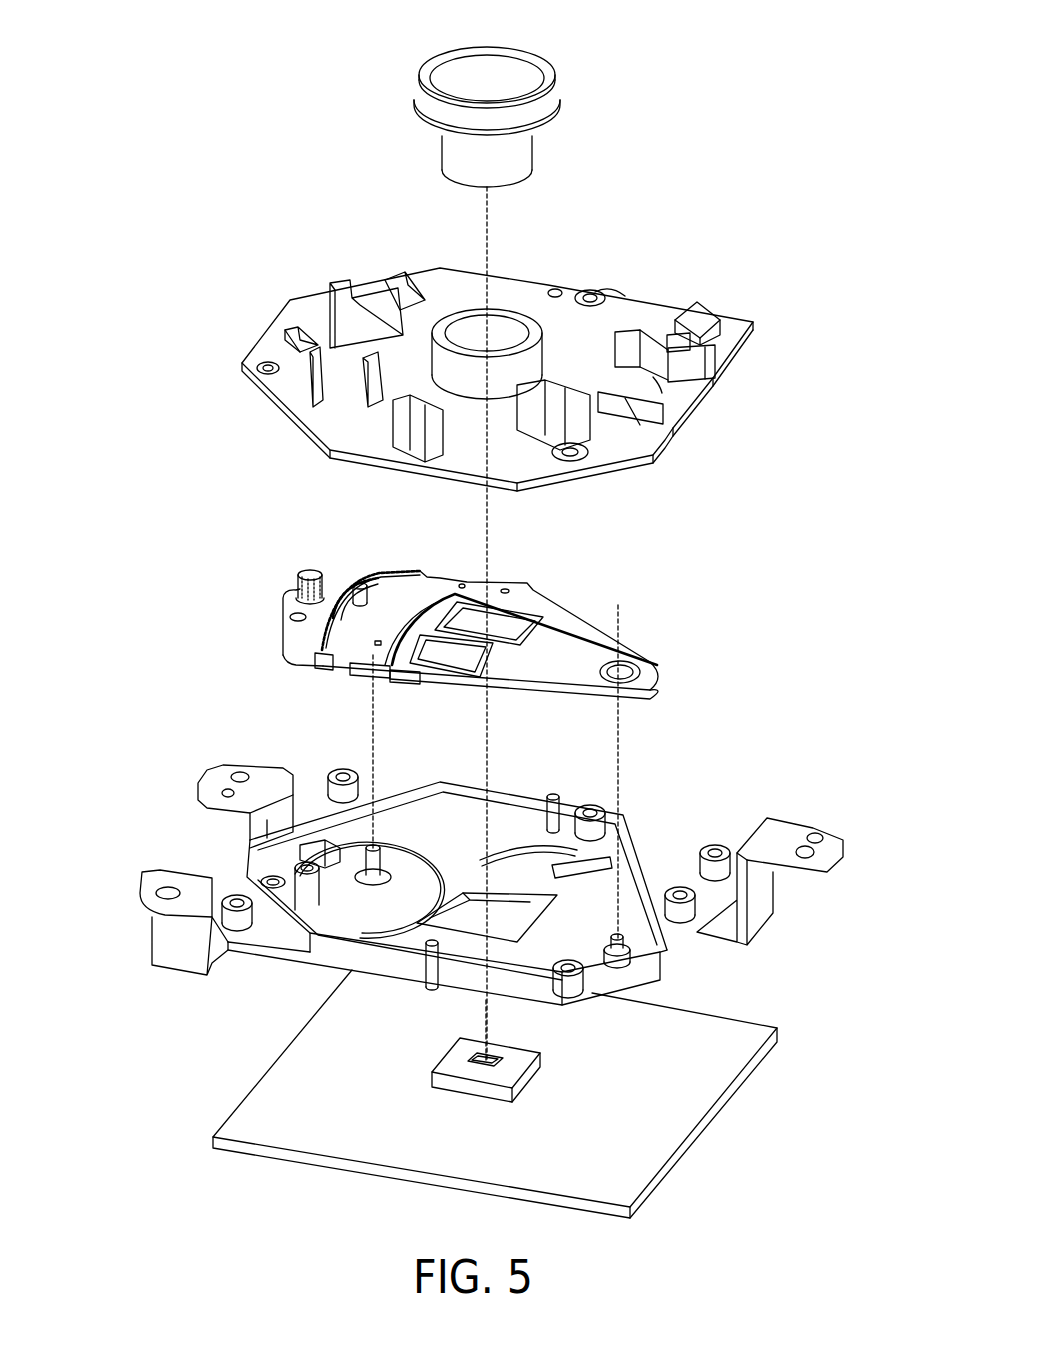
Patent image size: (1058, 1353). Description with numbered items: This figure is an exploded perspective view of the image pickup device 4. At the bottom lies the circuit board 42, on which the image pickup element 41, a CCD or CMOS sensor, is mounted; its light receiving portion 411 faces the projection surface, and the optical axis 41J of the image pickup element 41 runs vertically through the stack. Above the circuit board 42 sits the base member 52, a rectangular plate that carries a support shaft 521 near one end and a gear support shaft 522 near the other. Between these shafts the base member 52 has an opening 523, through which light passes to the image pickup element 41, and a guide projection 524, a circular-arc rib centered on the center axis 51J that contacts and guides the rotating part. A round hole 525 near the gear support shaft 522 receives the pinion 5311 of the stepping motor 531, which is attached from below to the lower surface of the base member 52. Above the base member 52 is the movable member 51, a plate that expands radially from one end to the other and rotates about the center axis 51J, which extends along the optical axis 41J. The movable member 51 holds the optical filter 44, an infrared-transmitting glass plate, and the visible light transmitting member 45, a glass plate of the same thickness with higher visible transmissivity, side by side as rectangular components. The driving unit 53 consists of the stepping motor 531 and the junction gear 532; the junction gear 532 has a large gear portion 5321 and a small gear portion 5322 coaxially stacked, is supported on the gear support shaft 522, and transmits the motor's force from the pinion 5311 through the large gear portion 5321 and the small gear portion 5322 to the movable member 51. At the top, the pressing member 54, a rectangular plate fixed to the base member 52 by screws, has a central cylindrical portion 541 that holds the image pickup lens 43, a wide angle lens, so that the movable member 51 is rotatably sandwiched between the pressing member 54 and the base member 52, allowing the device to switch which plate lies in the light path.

The image pickup device 4 is at (810, 36).
The image pickup lens 43 is at (586, 110).
The pressing member 54 is at (514, 356).
The cylindrical portion 541 is at (498, 328).
The driving unit 53 is at (290, 603).
The stepping motor 531 is at (300, 662).
The pinion 5311 is at (298, 578).
The junction gear 532 is at (311, 566).
The large gear portion 5321 is at (340, 572).
The small gear portion 5322 is at (352, 572).
The movable member 51 is at (537, 733).
The center axis 51J is at (624, 612).
The optical filter 44 is at (452, 668).
The visible light transmitting member 45 is at (505, 622).
The base member 52 is at (489, 841).
The support shaft 521 is at (632, 945).
The gear support shaft 522 is at (360, 882).
The opening 523 is at (518, 934).
The guide projection 524 is at (372, 884).
The round hole 525 is at (304, 856).
The image pickup element 41 is at (505, 1051).
The light receiving portion 411 is at (502, 1045).
The optical axis 41J is at (484, 1030).
The circuit board 42 is at (702, 1098).